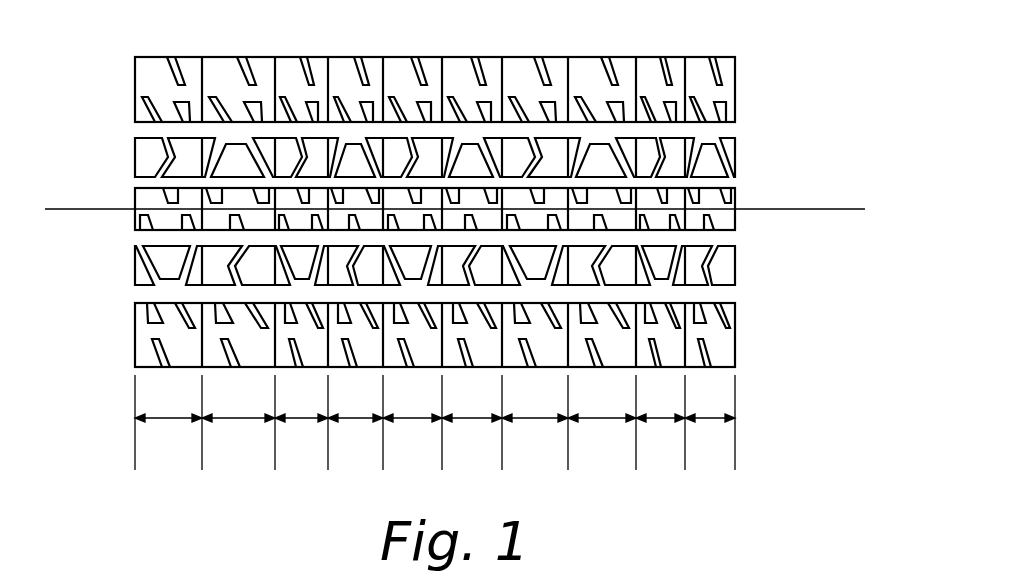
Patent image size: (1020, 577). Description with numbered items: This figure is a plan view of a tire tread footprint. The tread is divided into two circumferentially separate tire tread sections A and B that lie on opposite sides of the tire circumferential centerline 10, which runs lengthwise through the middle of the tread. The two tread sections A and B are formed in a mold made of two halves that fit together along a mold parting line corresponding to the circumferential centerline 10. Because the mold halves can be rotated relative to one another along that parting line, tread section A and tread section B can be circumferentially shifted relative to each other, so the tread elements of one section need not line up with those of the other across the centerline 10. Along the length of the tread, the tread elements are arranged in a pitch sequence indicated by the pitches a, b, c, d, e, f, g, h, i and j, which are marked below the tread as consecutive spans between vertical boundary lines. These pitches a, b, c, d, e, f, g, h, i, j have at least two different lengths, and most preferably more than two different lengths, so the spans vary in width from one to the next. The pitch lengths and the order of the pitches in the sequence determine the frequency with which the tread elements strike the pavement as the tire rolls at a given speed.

The tire circumferential centerline 10 is at (842, 209).
The tire tread section A is at (758, 55).
The tire tread section B is at (758, 220).
The pitch a is at (168, 422).
The pitch b is at (238, 422).
The pitch c is at (301, 422).
The pitch d is at (355, 422).
The pitch e is at (412, 422).
The pitch f is at (472, 422).
The pitch g is at (535, 422).
The pitch h is at (602, 422).
The pitch i is at (660, 422).
The pitch j is at (710, 422).